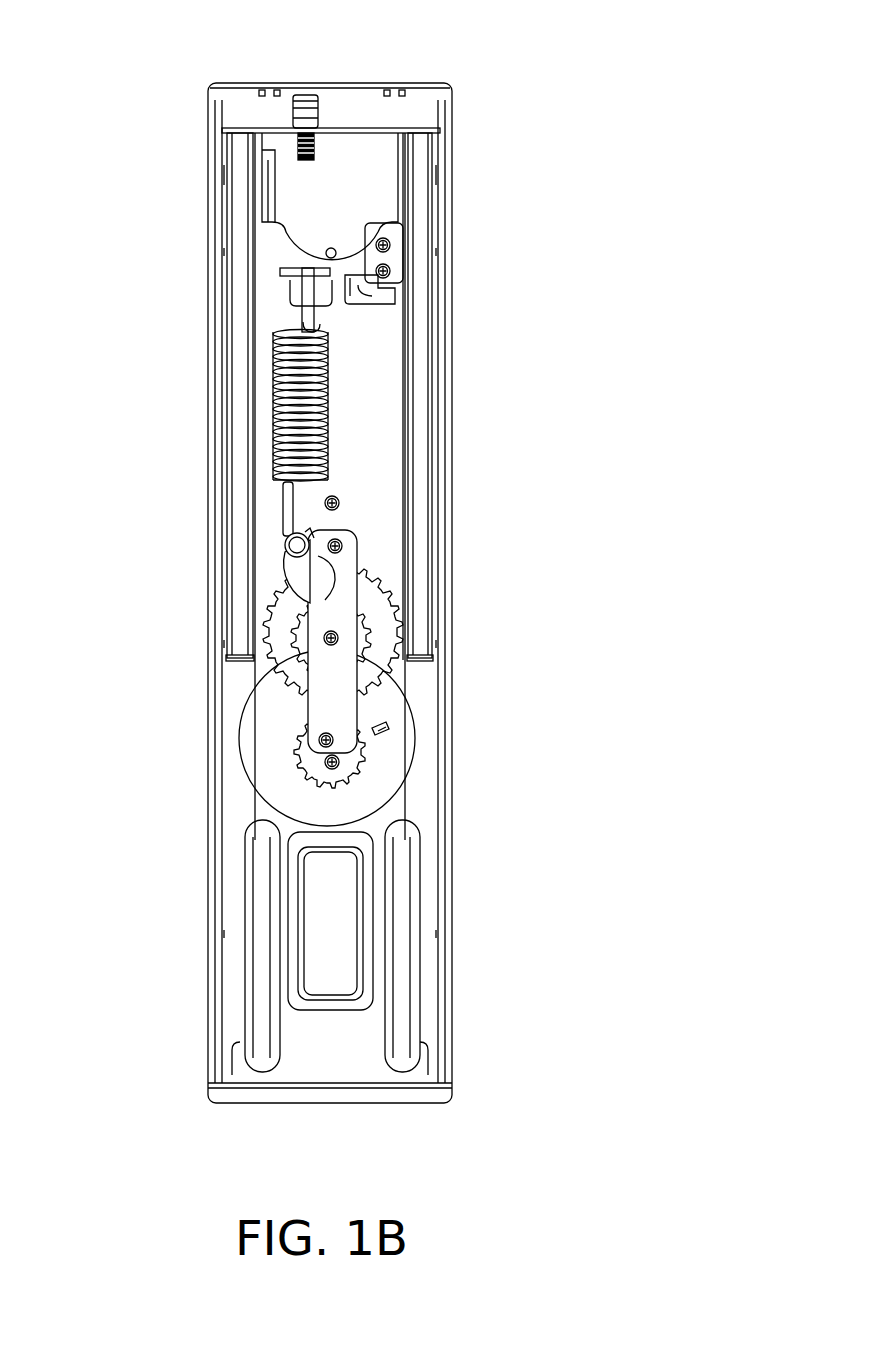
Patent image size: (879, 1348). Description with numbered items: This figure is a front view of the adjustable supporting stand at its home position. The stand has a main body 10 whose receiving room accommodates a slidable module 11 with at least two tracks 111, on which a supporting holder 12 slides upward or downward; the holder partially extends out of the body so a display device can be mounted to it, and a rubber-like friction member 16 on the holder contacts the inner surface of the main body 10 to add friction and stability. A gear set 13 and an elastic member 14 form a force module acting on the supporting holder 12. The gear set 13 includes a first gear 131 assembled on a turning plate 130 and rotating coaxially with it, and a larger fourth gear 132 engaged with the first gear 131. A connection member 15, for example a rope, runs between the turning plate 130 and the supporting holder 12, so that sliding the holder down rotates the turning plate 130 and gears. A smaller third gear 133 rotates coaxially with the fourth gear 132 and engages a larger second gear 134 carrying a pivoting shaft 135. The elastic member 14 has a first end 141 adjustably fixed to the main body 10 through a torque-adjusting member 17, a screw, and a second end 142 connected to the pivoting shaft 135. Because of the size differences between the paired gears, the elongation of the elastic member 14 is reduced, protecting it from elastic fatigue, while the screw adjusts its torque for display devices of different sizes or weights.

The main body 10 is at (228, 83).
The slidable module 11 is at (330, 206).
The tracks 111 is at (245, 219).
The supporting holder 12 is at (375, 199).
The gear set 13 is at (226, 678).
The elastic member 14 is at (338, 397).
The connection member 15 is at (405, 583).
The friction member 16 is at (360, 290).
The torque-adjusting member 17 is at (300, 160).
The turning plate 130 is at (270, 757).
The first gear 131 is at (290, 727).
The fourth gear 132 is at (290, 668).
The third gear 133 is at (292, 636).
The second gear 134 is at (318, 583).
The pivoting shaft 135 is at (226, 571).
The first end 141 is at (300, 297).
The second end 142 is at (288, 540).